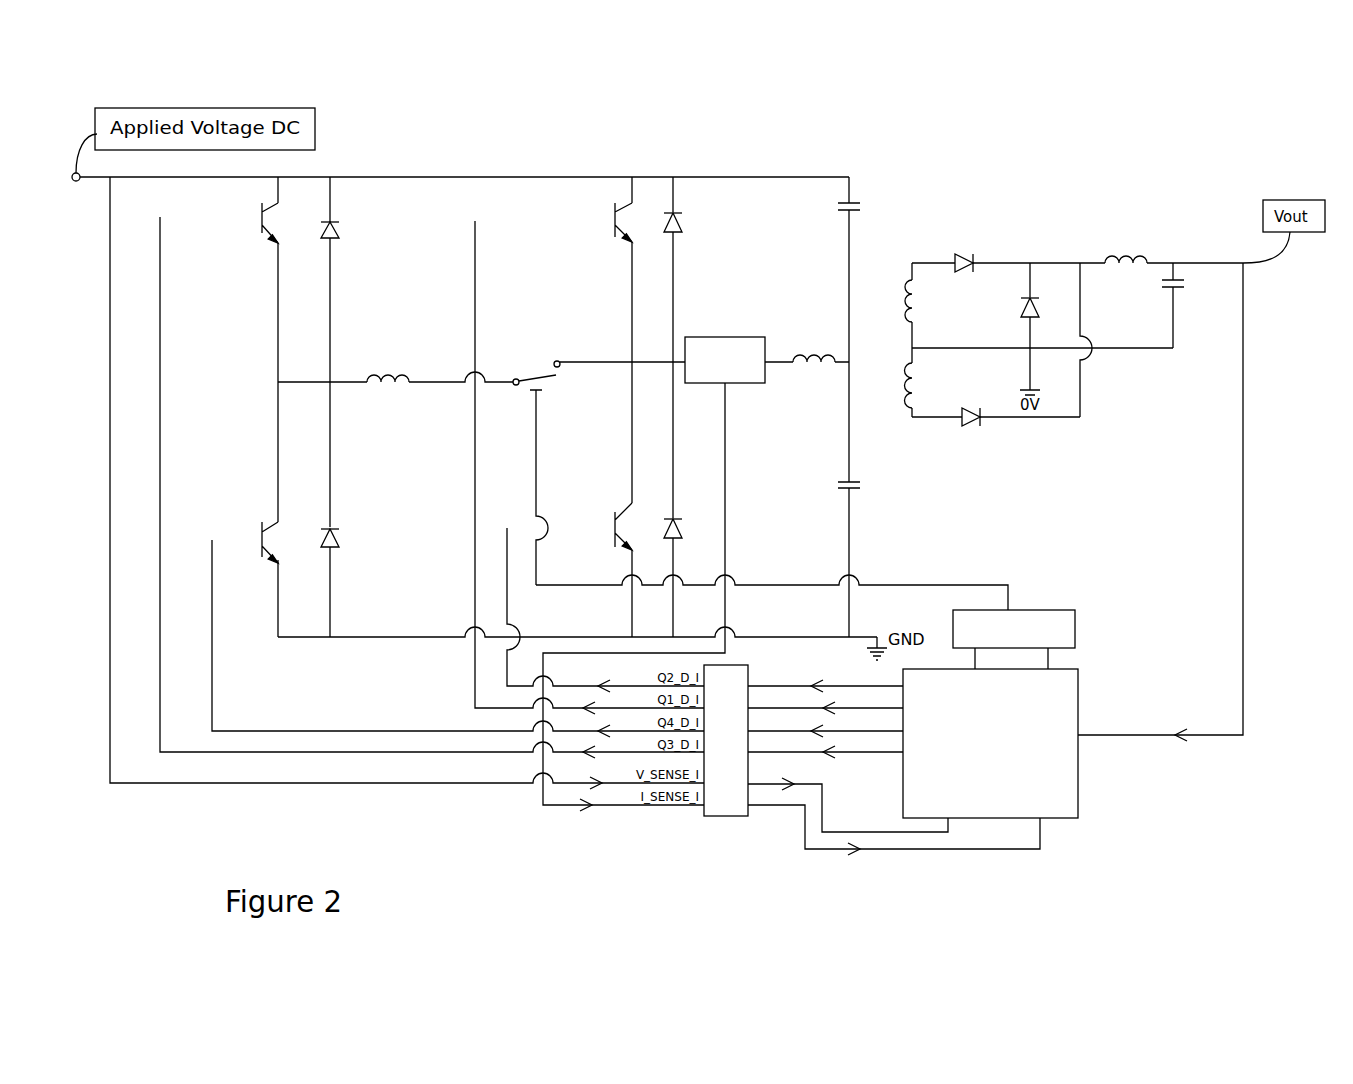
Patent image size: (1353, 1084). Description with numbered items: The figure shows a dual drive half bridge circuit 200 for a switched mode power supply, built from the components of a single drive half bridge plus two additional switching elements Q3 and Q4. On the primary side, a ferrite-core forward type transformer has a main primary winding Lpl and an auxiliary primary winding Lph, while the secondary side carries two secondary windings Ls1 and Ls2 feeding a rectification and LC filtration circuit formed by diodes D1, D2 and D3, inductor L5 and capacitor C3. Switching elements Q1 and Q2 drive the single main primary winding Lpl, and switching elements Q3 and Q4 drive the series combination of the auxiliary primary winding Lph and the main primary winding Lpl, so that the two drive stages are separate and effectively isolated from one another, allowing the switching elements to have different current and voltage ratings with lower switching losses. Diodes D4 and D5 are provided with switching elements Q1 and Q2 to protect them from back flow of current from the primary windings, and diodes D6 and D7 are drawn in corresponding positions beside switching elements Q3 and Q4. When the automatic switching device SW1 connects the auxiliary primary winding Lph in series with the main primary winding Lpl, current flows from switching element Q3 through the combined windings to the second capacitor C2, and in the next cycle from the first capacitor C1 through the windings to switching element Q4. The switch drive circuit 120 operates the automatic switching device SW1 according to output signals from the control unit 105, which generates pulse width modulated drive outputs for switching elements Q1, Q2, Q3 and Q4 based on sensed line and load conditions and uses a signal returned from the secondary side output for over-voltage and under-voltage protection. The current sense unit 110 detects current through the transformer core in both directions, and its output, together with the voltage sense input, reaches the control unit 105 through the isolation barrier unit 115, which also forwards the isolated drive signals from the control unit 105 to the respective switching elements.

The dual drive half bridge circuit 200 is at (1018, 160).
The control unit 105 is at (1065, 818).
The current sense unit 110 is at (707, 337).
The isolation barrier unit 115 is at (718, 816).
The switch drive circuit 120 is at (1075, 622).
The switching element Q1 is at (615, 205).
The switching element Q2 is at (615, 522).
The switching element Q3 is at (262, 205).
The switching element Q4 is at (262, 529).
The diode D1 is at (971, 262).
The diode D2 is at (980, 420).
The diode D3 is at (1035, 315).
The diode D4 is at (673, 232).
The diode D5 is at (673, 538).
The diode D6 is at (330, 238).
The diode D7 is at (330, 547).
The first capacitor C1 is at (849, 200).
The second capacitor C2 is at (852, 490).
The capacitor C3 is at (1177, 290).
The inductor L5 is at (1140, 265).
The secondary winding Ls1 is at (905, 283).
The secondary winding Ls2 is at (905, 393).
The auxiliary primary winding Lph is at (408, 380).
The main primary winding Lpl is at (808, 360).
The automatic switching device SW1 is at (536, 360).